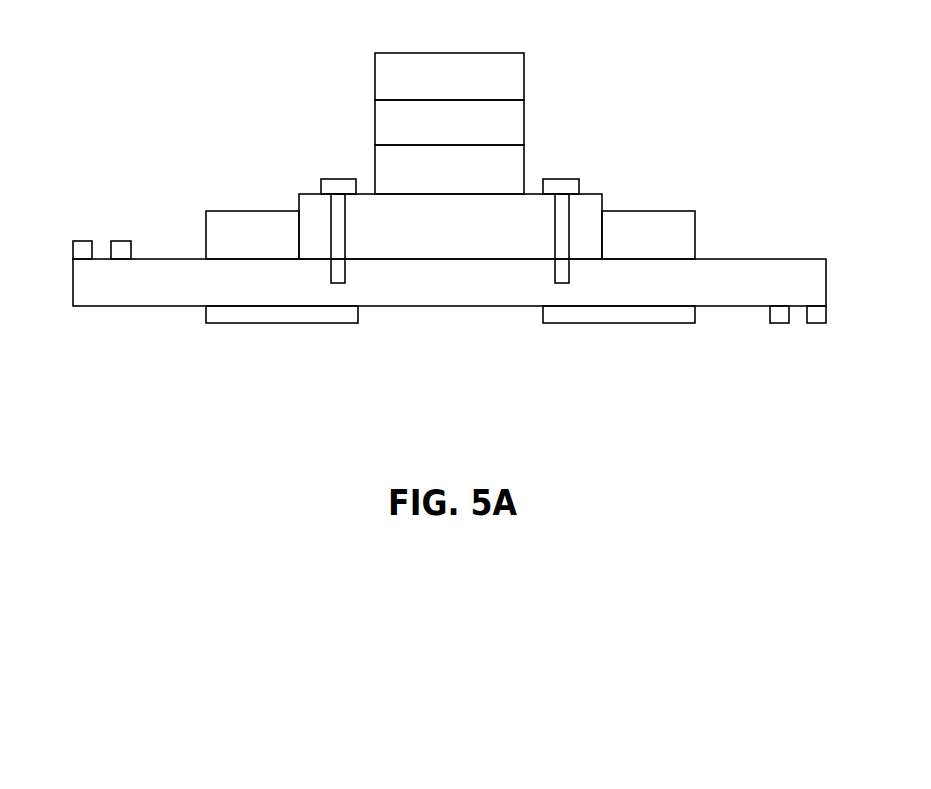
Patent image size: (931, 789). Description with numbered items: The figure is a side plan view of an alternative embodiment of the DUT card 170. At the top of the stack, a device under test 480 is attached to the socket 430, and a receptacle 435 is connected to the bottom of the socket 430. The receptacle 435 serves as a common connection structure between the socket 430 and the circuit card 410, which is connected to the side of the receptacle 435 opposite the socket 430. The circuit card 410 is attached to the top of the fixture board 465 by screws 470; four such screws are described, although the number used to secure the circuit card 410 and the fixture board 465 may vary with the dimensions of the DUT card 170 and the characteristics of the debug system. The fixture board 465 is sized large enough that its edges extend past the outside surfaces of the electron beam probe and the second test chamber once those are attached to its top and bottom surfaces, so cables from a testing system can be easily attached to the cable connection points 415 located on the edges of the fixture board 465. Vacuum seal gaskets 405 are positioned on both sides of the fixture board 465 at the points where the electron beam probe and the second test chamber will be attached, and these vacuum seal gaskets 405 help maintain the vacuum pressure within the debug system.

The DUT card 170 is at (133, 108).
The vacuum seal gaskets 405 is at (695, 232).
The circuit card 410 is at (532, 193).
The cable connection points 415 is at (83, 241).
The socket 430 is at (524, 123).
The receptacle 435 is at (524, 160).
The fixture board 465 is at (732, 306).
The screws 470 is at (321, 185).
The device under test 480 is at (524, 77).